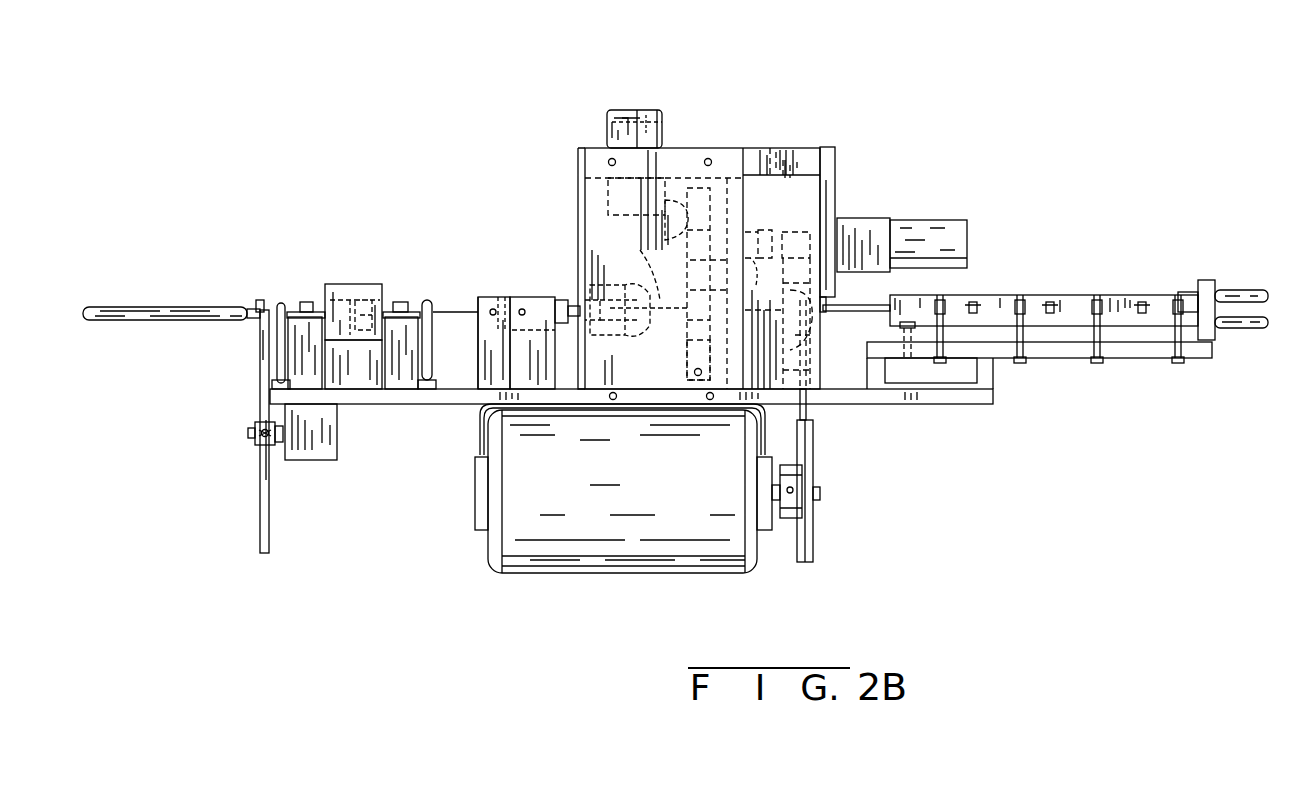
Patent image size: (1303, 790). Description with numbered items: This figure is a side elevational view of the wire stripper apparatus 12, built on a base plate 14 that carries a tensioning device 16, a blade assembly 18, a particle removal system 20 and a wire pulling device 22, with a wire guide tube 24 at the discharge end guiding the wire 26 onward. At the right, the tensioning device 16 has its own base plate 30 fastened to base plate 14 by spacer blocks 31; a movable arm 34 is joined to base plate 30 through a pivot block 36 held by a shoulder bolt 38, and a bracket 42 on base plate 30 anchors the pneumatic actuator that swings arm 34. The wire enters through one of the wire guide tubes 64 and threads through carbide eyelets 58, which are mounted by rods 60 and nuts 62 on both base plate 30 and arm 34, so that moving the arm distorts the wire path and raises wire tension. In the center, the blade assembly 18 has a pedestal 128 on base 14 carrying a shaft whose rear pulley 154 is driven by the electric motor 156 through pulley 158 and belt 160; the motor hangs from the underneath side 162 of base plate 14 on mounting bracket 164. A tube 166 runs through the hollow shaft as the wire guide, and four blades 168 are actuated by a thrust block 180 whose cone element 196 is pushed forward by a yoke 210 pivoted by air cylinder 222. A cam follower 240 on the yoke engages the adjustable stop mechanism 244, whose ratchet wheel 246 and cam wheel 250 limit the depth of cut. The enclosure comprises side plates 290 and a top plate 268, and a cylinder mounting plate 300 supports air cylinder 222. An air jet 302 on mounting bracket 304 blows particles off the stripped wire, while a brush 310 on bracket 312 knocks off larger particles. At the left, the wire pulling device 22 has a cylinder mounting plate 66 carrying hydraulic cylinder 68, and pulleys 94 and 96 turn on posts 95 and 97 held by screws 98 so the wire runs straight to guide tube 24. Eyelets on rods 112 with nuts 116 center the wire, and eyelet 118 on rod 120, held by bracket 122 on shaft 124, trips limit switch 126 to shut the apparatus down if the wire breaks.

The wire stripper apparatus 12 is at (980, 94).
The base plate 14 is at (987, 396).
The tensioning device 16 is at (1093, 245).
The blade assembly 18 is at (776, 120).
The particle removal system 20 is at (536, 216).
The wire pulling device 22 is at (348, 226).
The wire guide tube 24 is at (137, 310).
The wire 26 is at (455, 305).
The base plate 30 is at (1212, 352).
The spacer blocks 31 is at (885, 372).
The movable arm 34 is at (1185, 295).
The pivot block 36 is at (897, 337).
The shoulder bolt 38 is at (890, 306).
The bracket 42 is at (1208, 285).
The carbide eyelets 58 is at (955, 300).
The rods 60 is at (975, 302).
The nuts 62 is at (945, 363).
The wire guide tubes 64 is at (1249, 292).
The cylinder mounting plate 66 is at (360, 378).
The hydraulic cylinder 68 is at (367, 285).
The pulley 94 is at (300, 318).
The post 95 is at (300, 352).
The pulley 96 is at (418, 330).
The post 97 is at (432, 346).
The screws 98 is at (305, 302).
The rods 112 is at (277, 345).
The nuts 116 is at (272, 383).
The eyelet 118 is at (260, 304).
The rod 120 is at (260, 501).
The bracket 122 is at (255, 437).
The shaft 124 is at (255, 431).
The limit switch 126 is at (325, 445).
The pedestal 128 is at (822, 378).
The pulley 154 is at (715, 300).
The electric motor 156 is at (712, 560).
The pulley 158 is at (790, 520).
The belt 160 is at (812, 408).
The underneath side 162 is at (446, 395).
The mounting bracket 164 is at (480, 435).
The tube 166 is at (625, 330).
The blades 168 is at (625, 280).
The thrust block 180 is at (679, 360).
The cone element 196 is at (660, 300).
The yoke 210 is at (765, 220).
The air cylinder 222 is at (877, 228).
The cam follower 240 is at (686, 185).
The adjustable stop mechanism 244 is at (639, 94).
The ratchet wheel 246 is at (620, 118).
The cam wheel 250 is at (650, 125).
The top plate 268 is at (790, 158).
The side plates 290 is at (810, 198).
The cylinder mounting plate 300 is at (830, 185).
The air jet 302 is at (572, 310).
The mounting bracket 304 is at (545, 305).
The brush 310 is at (500, 305).
The bracket 312 is at (490, 320).